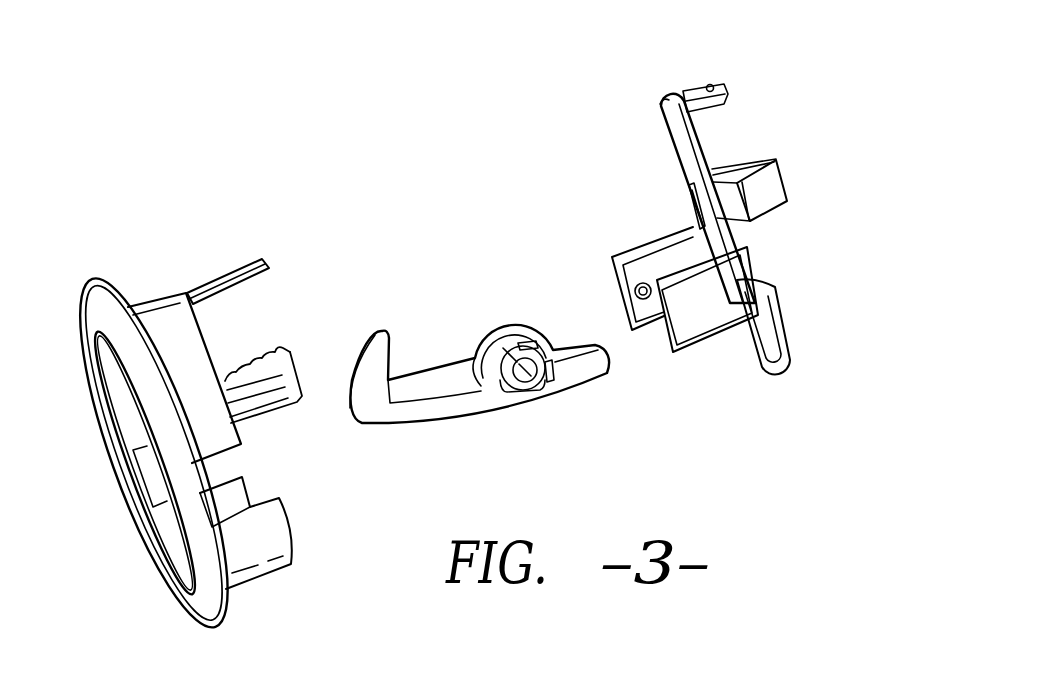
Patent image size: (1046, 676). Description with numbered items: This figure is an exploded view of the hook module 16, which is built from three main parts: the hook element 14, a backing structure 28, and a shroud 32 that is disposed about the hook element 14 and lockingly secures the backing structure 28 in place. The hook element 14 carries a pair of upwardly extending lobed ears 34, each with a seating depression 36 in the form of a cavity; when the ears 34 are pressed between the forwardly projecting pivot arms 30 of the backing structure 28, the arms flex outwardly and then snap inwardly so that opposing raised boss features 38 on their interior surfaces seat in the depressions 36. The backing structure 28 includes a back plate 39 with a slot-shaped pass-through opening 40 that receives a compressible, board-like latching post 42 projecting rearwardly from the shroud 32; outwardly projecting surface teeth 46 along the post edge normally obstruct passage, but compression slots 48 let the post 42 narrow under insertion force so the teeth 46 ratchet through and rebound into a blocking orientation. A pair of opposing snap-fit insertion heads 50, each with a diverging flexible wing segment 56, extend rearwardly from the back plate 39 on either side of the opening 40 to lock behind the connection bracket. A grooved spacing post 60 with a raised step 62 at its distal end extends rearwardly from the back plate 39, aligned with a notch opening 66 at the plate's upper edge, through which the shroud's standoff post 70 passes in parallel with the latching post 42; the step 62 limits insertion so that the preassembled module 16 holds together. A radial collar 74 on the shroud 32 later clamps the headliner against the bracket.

The hook element 14 is at (479, 380).
The hook module 16 is at (124, 104).
The backing structure 28 is at (742, 197).
The pivot arms 30 is at (664, 305).
The shroud 32 is at (149, 289).
The lobed ears 34 is at (500, 322).
The seating depression 36 is at (529, 371).
The raised boss features 38 is at (632, 310).
The back plate 39 is at (747, 250).
The pass-through opening 40 is at (687, 207).
The latching post 42 is at (283, 375).
The surface teeth 46 is at (234, 372).
The compression slots 48 is at (263, 393).
The snap-fit insertion heads 50 is at (771, 152).
The wing segment 56 is at (793, 163).
The spacing post 60 is at (730, 90).
The raised step 62 is at (712, 83).
The notch opening 66 is at (660, 105).
The standoff post 70 is at (230, 266).
The radial collar 74 is at (97, 283).